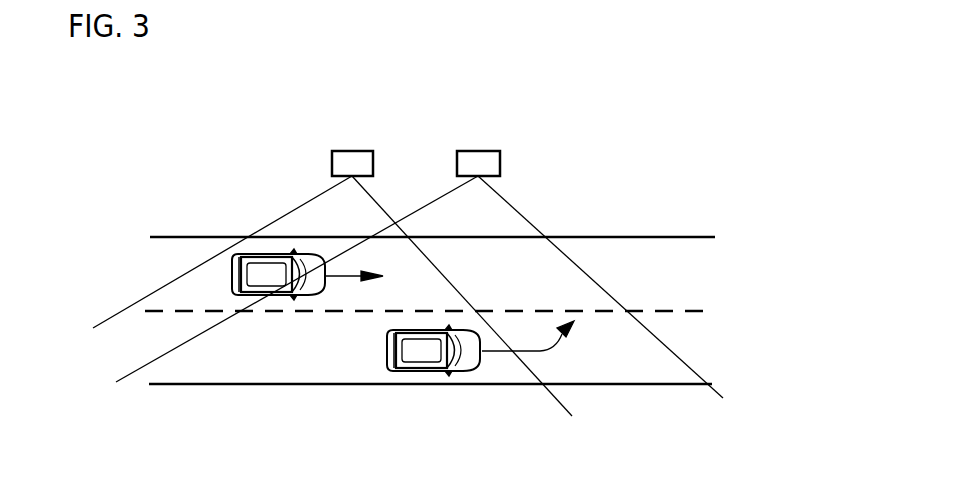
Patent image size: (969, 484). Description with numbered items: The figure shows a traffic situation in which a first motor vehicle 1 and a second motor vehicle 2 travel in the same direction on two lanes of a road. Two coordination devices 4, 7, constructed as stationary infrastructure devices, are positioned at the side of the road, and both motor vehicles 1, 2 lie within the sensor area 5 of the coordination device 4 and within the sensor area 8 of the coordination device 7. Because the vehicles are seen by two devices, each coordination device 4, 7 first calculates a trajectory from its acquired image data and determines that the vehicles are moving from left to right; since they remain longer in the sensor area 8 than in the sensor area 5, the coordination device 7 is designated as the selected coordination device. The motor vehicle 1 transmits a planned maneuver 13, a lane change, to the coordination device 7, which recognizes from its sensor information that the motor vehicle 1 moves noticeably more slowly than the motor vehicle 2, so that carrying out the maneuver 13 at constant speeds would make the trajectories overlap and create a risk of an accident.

The first motor vehicle 1 is at (387, 355).
The second motor vehicle 2 is at (232, 278).
The coordination device 4 is at (352, 151).
The sensor area 5 is at (561, 406).
The coordination device 7 is at (477, 150).
The sensor area 8 is at (658, 340).
The planned maneuver 13 is at (545, 350).